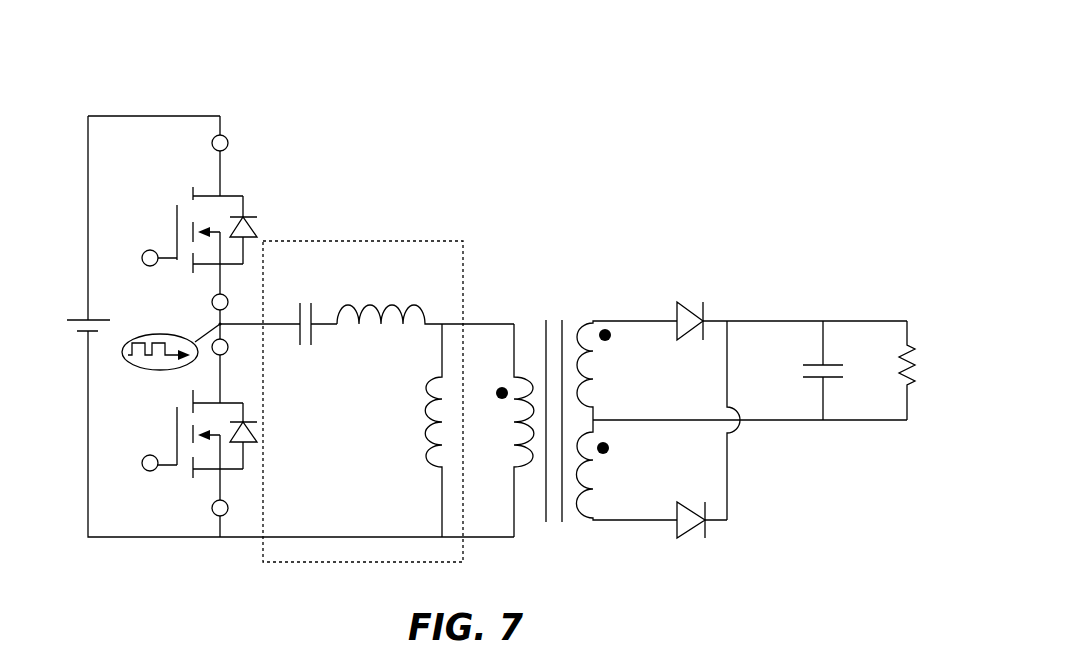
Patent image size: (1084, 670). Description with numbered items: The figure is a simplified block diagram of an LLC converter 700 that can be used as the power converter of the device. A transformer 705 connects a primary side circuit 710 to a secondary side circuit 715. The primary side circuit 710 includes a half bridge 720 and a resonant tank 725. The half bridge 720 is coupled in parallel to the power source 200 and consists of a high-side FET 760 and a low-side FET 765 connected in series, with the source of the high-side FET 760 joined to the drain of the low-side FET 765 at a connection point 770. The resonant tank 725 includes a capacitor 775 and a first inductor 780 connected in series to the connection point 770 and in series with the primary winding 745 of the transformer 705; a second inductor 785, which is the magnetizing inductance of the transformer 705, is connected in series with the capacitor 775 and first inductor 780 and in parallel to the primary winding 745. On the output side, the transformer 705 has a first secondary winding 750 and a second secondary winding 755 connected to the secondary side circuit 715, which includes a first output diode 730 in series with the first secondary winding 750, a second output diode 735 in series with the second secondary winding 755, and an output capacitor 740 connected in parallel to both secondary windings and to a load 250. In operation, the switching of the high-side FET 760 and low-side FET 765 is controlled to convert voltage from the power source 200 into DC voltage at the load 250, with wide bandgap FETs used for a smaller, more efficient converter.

The LLC converter 700 is at (123, 72).
The power source 200 is at (70, 317).
The half bridge 720 is at (265, 135).
The high-side FET 760 is at (177, 205).
The low-side FET 765 is at (173, 467).
The connection point 770 is at (218, 323).
The primary side circuit 710 is at (453, 200).
The resonant tank 725 is at (332, 562).
The capacitor 775 is at (313, 337).
The first inductor 780 is at (425, 312).
The second inductor 785 is at (427, 453).
The primary winding 745 is at (530, 427).
The transformer 705 is at (562, 318).
The first secondary winding 750 is at (592, 374).
The second secondary winding 755 is at (590, 495).
The first output diode 730 is at (705, 318).
The second output diode 735 is at (675, 533).
The secondary side circuit 715 is at (813, 290).
The output capacitor 740 is at (805, 363).
The load 250 is at (912, 347).